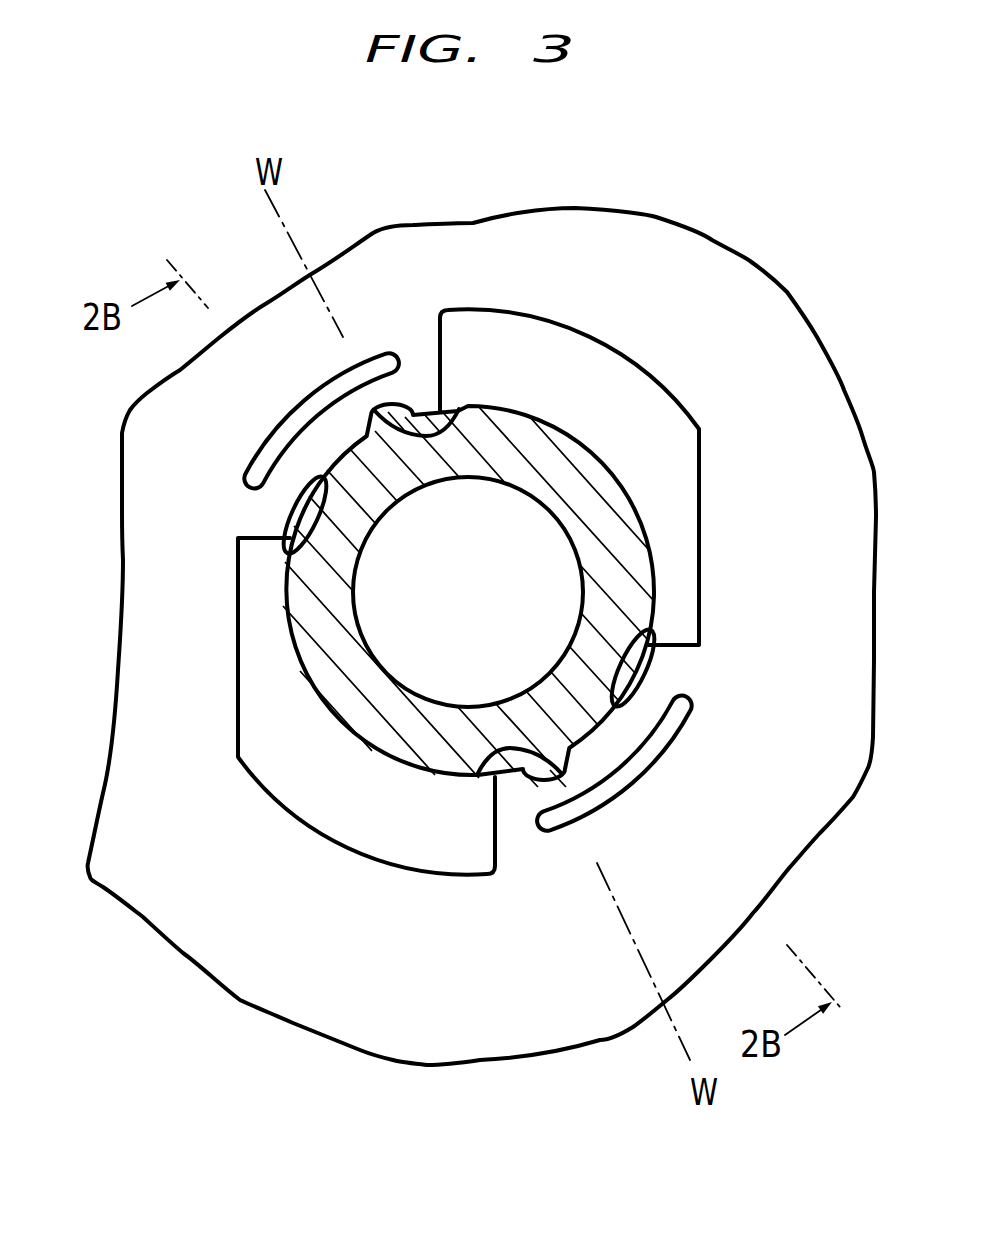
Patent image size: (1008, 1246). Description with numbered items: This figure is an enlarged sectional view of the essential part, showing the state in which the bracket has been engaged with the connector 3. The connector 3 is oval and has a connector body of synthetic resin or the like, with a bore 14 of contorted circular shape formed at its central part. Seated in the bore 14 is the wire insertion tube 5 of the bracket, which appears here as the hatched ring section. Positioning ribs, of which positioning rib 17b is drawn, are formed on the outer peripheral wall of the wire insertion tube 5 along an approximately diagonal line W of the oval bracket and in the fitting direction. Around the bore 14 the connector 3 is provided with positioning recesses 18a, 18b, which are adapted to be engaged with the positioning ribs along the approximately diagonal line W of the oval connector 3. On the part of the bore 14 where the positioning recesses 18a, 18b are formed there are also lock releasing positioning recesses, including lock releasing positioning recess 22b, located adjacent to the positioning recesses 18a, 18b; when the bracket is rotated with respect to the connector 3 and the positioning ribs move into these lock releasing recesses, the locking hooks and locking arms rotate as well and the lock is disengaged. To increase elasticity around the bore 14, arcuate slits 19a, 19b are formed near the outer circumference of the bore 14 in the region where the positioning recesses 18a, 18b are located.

The connector 3 is at (318, 937).
The wire insertion tube 5 is at (613, 470).
The bore 14 is at (699, 500).
The positioning rib 17b is at (408, 408).
The positioning recess 18a is at (480, 777).
The positioning recess 18b is at (470, 403).
The slit 19a is at (618, 788).
The slit 19b is at (270, 443).
The lock releasing positioning recess 22b is at (307, 547).